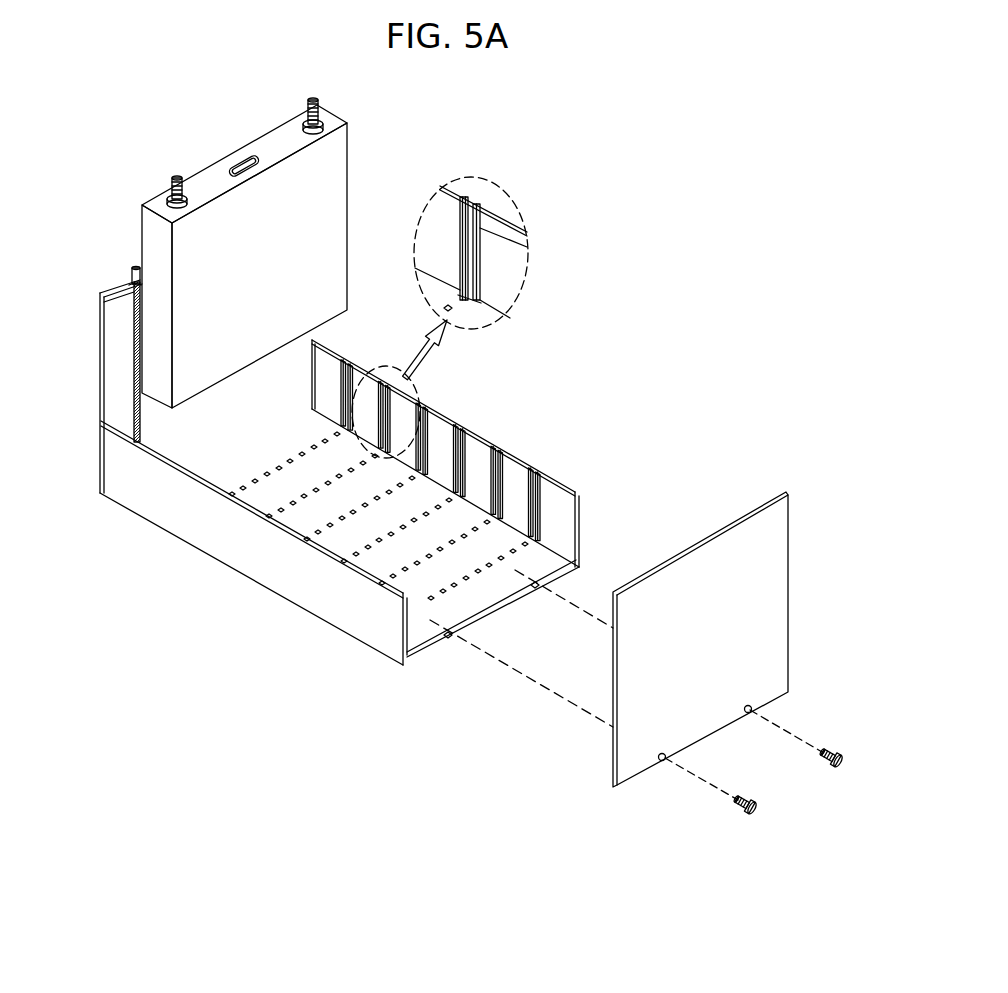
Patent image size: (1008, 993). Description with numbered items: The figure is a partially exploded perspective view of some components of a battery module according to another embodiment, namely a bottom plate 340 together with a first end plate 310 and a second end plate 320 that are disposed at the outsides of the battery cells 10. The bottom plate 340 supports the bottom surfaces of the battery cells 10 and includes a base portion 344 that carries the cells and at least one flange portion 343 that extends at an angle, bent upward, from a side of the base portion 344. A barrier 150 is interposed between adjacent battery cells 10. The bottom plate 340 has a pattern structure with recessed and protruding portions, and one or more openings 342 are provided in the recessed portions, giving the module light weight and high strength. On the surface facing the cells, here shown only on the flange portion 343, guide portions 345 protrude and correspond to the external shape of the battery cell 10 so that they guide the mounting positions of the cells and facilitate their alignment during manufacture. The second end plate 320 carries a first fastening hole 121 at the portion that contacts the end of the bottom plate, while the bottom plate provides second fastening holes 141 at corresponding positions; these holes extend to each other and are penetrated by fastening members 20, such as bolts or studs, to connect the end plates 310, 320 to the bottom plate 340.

The battery cell 10 is at (348, 197).
The fastening member 20 is at (760, 817).
The first fastening hole 121 is at (664, 756).
The second fastening hole 141 is at (537, 585).
The barrier 150 is at (100, 450).
The first end plate 310 is at (97, 380).
The second end plate 320 is at (605, 756).
The bottom plate 340 is at (305, 612).
The opening 342 is at (470, 520).
The flange portion 343 is at (245, 552).
The base portion 344 is at (220, 470).
The guide portion 345 is at (480, 270).